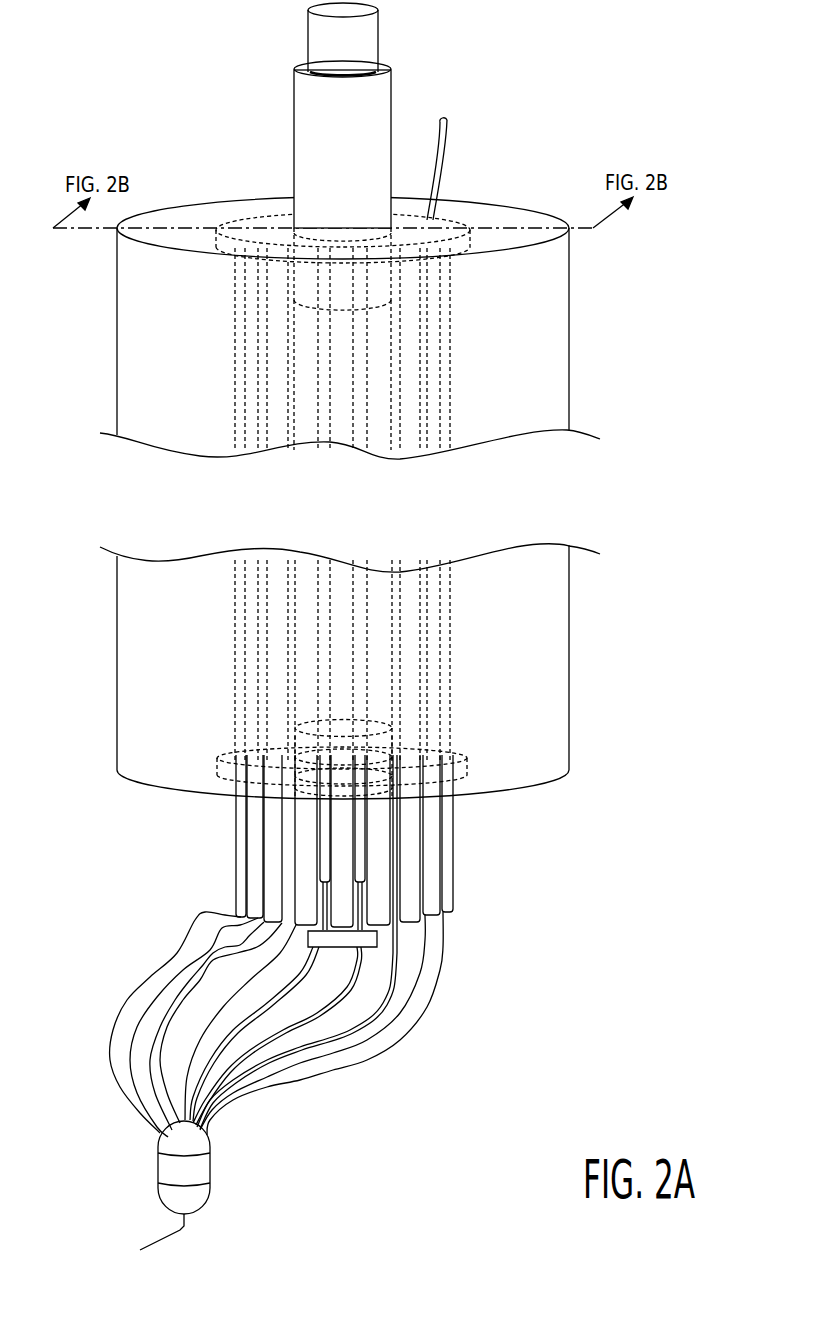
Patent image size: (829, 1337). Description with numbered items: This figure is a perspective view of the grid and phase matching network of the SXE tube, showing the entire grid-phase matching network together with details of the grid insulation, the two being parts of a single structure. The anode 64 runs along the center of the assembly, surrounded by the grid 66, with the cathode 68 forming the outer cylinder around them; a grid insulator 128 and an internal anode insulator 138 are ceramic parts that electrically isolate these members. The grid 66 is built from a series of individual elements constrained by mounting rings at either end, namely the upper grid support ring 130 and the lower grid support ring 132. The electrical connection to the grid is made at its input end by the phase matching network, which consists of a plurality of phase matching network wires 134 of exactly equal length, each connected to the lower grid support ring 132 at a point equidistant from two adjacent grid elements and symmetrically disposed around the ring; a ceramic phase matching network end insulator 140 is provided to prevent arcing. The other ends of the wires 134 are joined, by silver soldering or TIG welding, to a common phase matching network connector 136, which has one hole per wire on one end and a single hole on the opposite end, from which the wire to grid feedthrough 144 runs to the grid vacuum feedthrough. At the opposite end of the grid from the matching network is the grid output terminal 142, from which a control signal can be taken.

The anode 64 is at (362, 40).
The grid 66 is at (410, 350).
The cathode 68 is at (548, 282).
The grid insulator 128 is at (180, 207).
The upper grid support ring 130 is at (463, 220).
The lower grid support ring 132 is at (237, 765).
The phase matching network wire 134 is at (397, 1047).
The phase matching network connector 136 is at (205, 1172).
The internal anode insulator 138 is at (222, 228).
The phase matching network end insulator 140 is at (410, 880).
The grid output terminal 142 is at (445, 151).
The wire to grid feedthrough 144 is at (153, 1237).